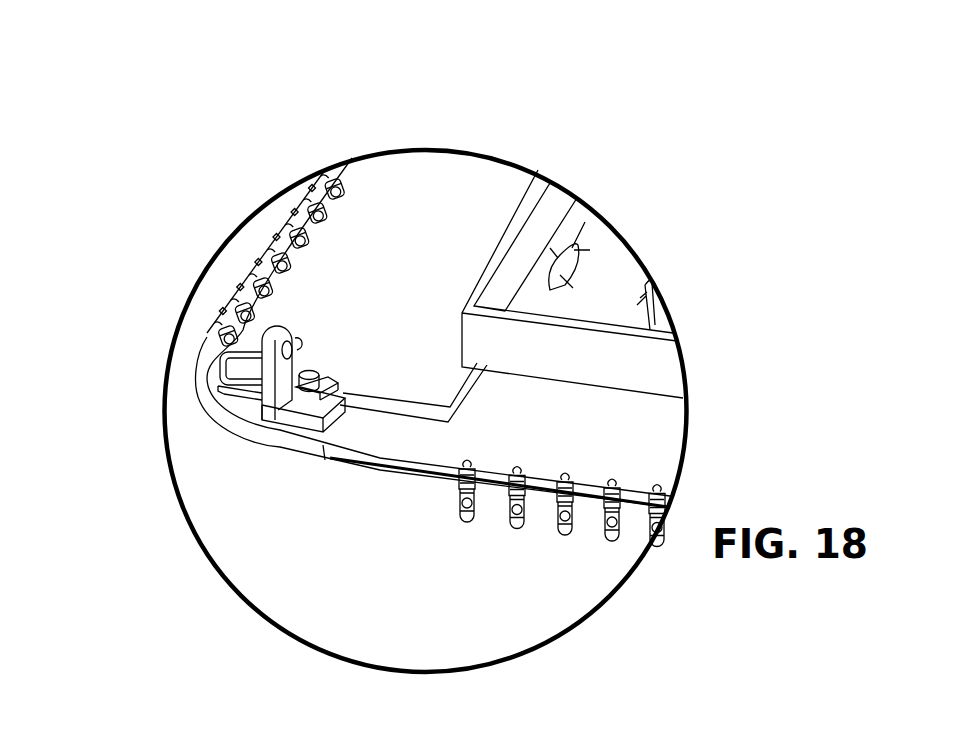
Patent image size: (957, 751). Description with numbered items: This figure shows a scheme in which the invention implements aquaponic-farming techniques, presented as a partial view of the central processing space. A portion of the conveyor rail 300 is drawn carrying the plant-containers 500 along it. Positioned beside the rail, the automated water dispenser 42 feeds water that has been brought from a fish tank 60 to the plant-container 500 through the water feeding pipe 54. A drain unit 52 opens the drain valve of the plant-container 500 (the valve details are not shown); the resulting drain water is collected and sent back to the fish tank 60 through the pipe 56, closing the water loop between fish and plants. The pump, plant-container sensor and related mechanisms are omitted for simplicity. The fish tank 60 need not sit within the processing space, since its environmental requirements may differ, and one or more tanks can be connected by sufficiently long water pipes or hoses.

The automated water dispenser 42 is at (288, 368).
The drain unit 52 is at (235, 387).
The water feeding pipe 54 is at (236, 349).
The pipe 56 is at (243, 397).
The fish tank 60 is at (652, 371).
The conveyor rail 300 is at (353, 462).
The plant-container 500 is at (567, 535).